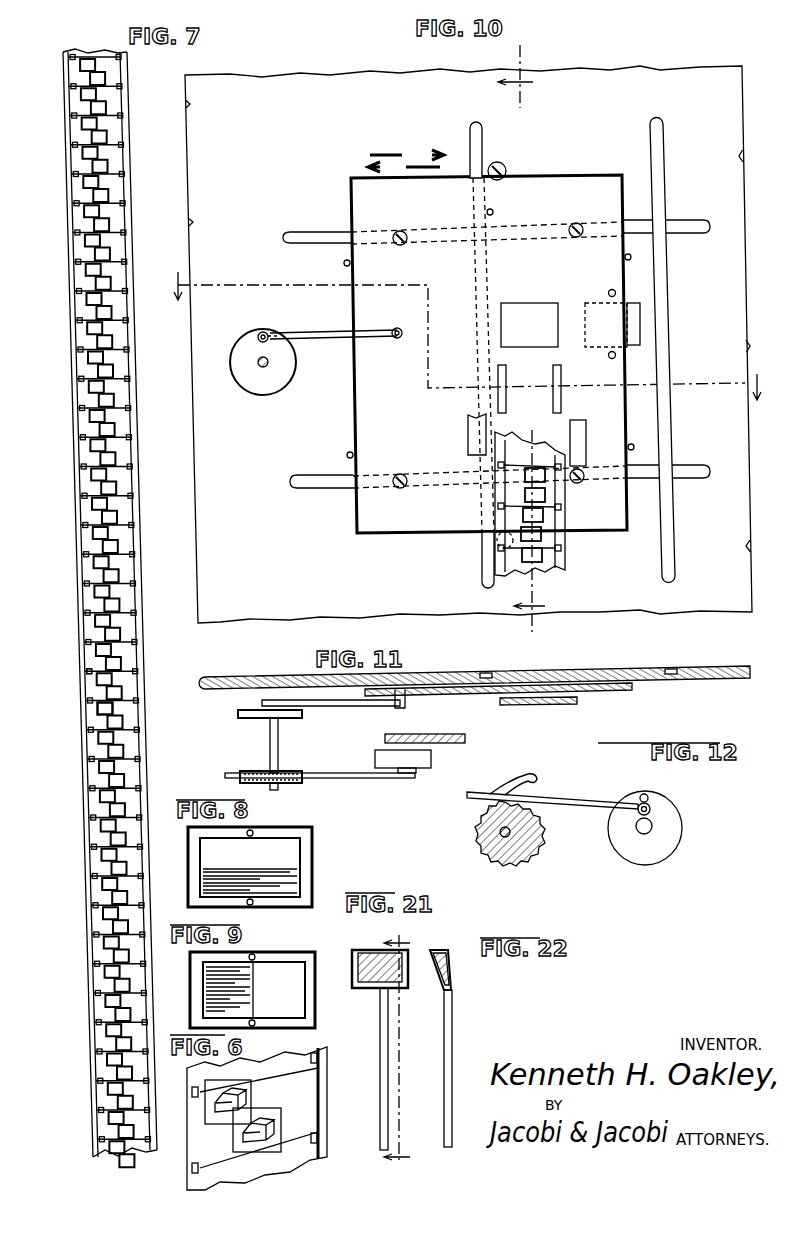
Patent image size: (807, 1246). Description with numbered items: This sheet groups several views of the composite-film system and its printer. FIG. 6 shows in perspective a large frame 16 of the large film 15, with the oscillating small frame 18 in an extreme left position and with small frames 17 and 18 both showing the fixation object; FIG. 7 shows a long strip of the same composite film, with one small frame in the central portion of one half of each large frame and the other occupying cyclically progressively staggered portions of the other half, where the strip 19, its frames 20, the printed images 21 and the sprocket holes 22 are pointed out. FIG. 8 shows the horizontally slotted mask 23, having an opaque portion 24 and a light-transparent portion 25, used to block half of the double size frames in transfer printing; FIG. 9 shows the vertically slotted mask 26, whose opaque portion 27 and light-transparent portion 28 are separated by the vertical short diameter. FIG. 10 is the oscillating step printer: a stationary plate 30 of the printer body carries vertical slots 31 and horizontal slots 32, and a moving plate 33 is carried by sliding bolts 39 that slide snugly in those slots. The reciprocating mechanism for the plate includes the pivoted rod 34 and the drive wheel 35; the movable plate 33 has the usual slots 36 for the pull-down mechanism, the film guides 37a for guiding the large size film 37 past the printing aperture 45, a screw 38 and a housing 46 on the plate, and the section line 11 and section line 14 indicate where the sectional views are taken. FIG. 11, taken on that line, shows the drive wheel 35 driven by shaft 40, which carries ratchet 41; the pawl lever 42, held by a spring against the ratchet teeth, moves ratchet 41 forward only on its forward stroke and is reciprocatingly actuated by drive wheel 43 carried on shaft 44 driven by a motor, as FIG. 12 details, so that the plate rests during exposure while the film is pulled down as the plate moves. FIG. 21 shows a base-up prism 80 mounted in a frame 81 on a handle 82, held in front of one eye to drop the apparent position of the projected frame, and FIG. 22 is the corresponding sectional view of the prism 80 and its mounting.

In FIG. 7, the film strip 19 is at (93, 608).
In FIG. 7, the film frame 20 is at (108, 740).
In FIG. 7, the picture image 21 is at (98, 704).
In FIG. 7, the sprocket hole 22 is at (86, 676).
In FIG. 21, the sprocket hole 22 is at (397, 1049).
In FIG. 10, the stationary plate 30 is at (598, 70).
In FIG. 11, the stationary plate 30 is at (752, 672).
In FIG. 10, the vertical slots 31 is at (470, 140).
In FIG. 10, the horizontal slots 32 is at (303, 243).
In FIG. 10, the moving plate 33 is at (351, 190).
In FIG. 11, the moving plate 33 is at (620, 692).
In FIG. 10, the pivoted rod 34 is at (318, 331).
In FIG. 10, the drive wheel 35 is at (247, 338).
In FIG. 11, the drive wheel 35 is at (238, 712).
In FIG. 10, the slots 36 is at (553, 406).
In FIG. 10, the large size film 37 is at (567, 560).
In FIG. 11, the large size film 37 is at (540, 705).
In FIG. 10, the film guides 37a is at (466, 425).
In FIG. 10, the screw 38 is at (500, 162).
In FIG. 10, the sliding bolts 39 is at (403, 232).
In FIG. 10, the printing aperture 45 is at (512, 312).
In FIG. 10, the lamp housing 46 is at (630, 300).
In FIG. 10, the section line 11— 11 is at (466, 336).
In FIG. 10, the section line 14- 14 is at (521, 342).
In FIG. 11, the shaft 40 is at (270, 745).
In FIG. 11, the ratchet 41 is at (288, 768).
In FIG. 12, the ratchet 41 is at (530, 850).
In FIG. 11, the pawl lever 42 is at (342, 779).
In FIG. 12, the pawl lever 42 is at (540, 797).
In FIG. 11, the drive wheel 43 is at (448, 734).
In FIG. 12, the drive wheel 43 is at (678, 815).
In FIG. 11, the shaft 44 is at (400, 734).
In FIG. 8, the mask 23 is at (300, 830).
In FIG. 8, the opaque portion 24 is at (290, 886).
In FIG. 8, the light-transparent portion 25 is at (290, 855).
In FIG. 9, the mount frame 26 is at (285, 957).
In FIG. 9, the opaque portion 27 is at (206, 986).
In FIG. 9, the light-transparent portion 28 is at (290, 1002).
In FIG. 6, the large film 15 is at (298, 1160).
In FIG. 6, the large frame 16 is at (310, 1096).
In FIG. 6, the small frame 17 is at (285, 1132).
In FIG. 6, the oscillating small frame 18 is at (322, 1060).
In FIG. 21, the base-up prism 80 is at (370, 954).
In FIG. 22, the base-up prism 80 is at (441, 950).
In FIG. 21, the frame 81 is at (400, 986).
In FIG. 22, the frame 81 is at (452, 972).
In FIG. 21, the handle 82 is at (388, 1052).
In FIG. 22, the handle 82 is at (453, 1030).